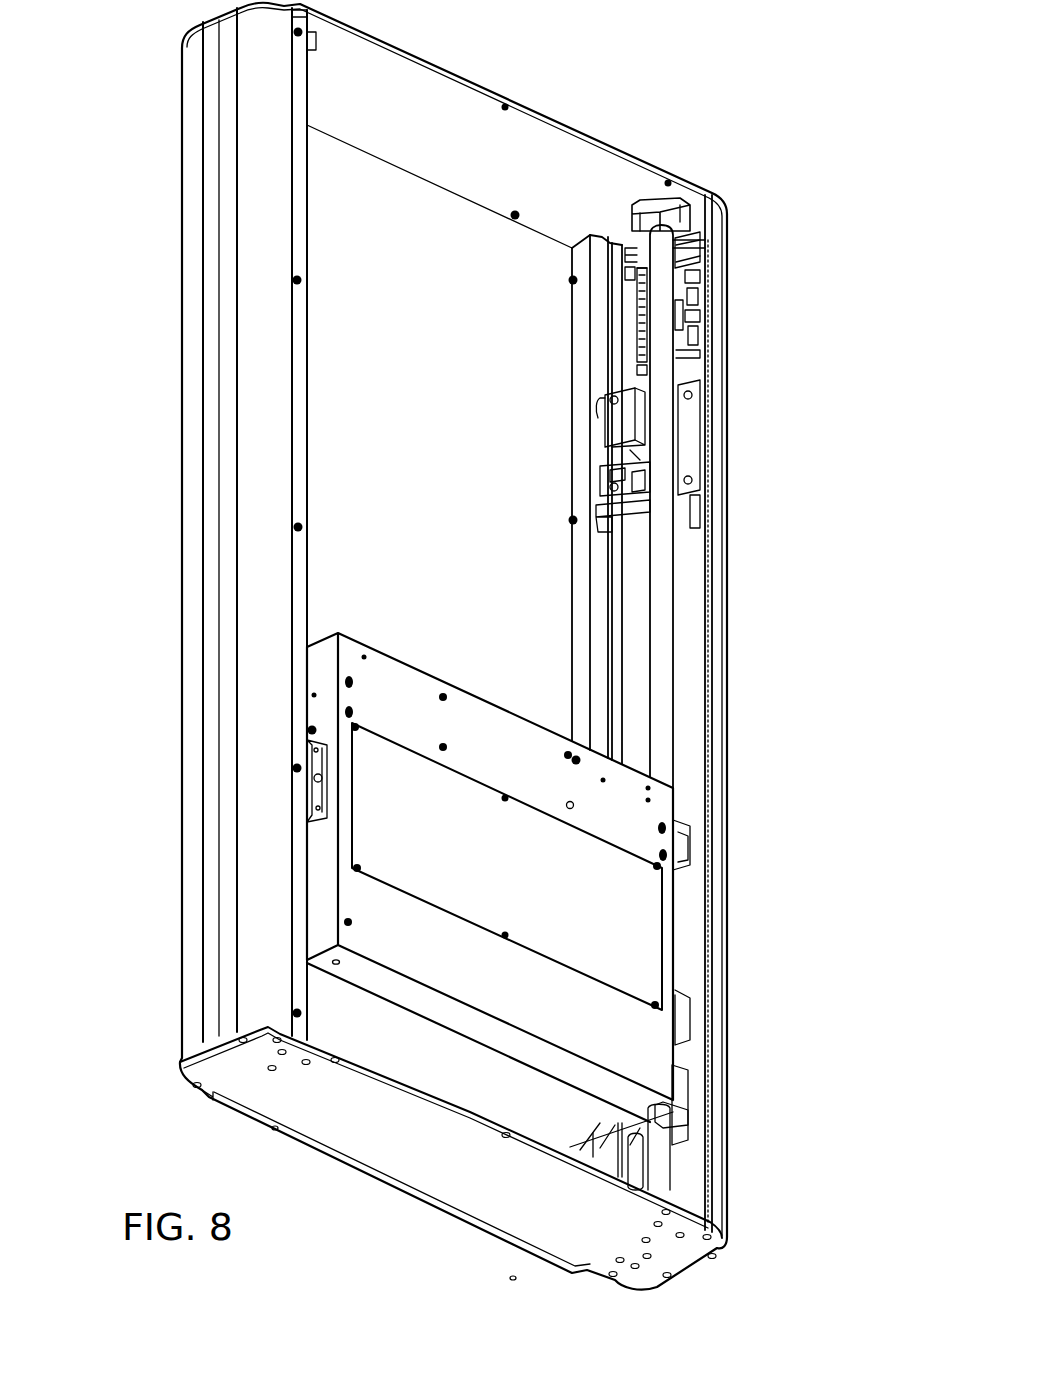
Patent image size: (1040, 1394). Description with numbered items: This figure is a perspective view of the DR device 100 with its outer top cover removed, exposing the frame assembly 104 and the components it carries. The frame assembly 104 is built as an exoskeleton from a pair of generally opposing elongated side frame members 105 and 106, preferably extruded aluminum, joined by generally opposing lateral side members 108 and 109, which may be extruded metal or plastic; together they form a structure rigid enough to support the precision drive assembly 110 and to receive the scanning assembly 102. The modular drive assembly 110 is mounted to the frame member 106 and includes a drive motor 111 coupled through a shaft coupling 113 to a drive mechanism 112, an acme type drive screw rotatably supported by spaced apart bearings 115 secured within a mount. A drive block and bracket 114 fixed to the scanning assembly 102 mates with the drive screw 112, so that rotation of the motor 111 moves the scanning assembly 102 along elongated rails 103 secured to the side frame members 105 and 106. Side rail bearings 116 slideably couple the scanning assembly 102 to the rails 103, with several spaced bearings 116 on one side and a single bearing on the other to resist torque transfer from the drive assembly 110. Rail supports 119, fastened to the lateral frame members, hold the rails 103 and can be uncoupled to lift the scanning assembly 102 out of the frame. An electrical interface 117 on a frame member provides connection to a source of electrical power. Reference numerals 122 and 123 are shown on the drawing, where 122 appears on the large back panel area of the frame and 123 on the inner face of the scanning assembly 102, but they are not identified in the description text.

The DR device 100 is at (114, 28).
The scanning assembly 102 is at (478, 852).
The rails 103 is at (663, 572).
The frame assembly 104 is at (178, 240).
The elongated side frame member 105 is at (218, 900).
The elongated side frame member 106 is at (730, 646).
The lateral side member 108 is at (394, 1165).
The lateral side member 109 is at (528, 102).
The drive assembly 110 is at (600, 426).
The drive motor 111 is at (618, 430).
The drive mechanism 112 is at (640, 628).
The shaft coupling 113 is at (605, 495).
The drive block and bracket 114 is at (682, 1018).
The bearings 115 is at (603, 520).
The side rail bearings 116 is at (317, 797).
The electrical interface 117 is at (702, 305).
The rail supports 119 is at (677, 208).
The back panel 122 is at (447, 327).
The inner plate 123 is at (640, 946).